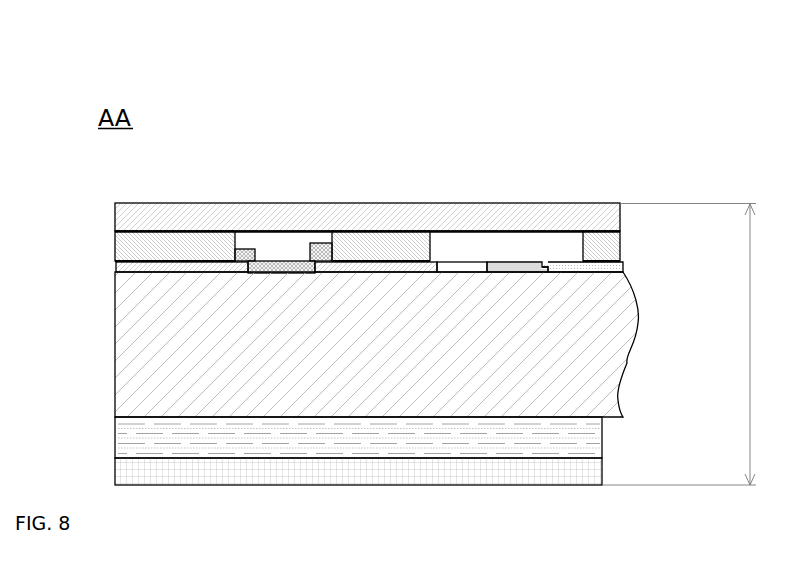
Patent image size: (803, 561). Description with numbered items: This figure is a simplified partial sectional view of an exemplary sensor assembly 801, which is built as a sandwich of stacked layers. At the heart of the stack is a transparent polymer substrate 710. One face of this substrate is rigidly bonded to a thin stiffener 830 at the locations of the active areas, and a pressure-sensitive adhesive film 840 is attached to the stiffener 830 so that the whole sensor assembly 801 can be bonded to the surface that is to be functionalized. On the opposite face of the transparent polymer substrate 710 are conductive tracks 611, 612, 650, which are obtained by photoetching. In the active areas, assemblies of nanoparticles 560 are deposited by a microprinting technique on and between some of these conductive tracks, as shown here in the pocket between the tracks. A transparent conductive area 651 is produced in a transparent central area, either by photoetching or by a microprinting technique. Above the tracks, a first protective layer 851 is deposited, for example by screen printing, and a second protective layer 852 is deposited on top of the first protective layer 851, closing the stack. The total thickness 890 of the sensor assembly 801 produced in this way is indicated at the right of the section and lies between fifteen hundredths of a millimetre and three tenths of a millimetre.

The sensor assembly 801 is at (471, 96).
The second protective layer 852 is at (180, 203).
The first protective layer 851 is at (115, 247).
The assemblies of nanoparticles 560 is at (284, 262).
The conductive track 612 is at (116, 268).
The conductive track 611 is at (404, 260).
The conductive track 650 is at (533, 262).
The transparent conductive area 651 is at (562, 262).
The transparent polymer substrate 710 is at (115, 343).
The thin stiffener 830 is at (115, 437).
The pressure-sensitive adhesive film 840 is at (115, 472).
The total thickness 890 is at (679, 345).